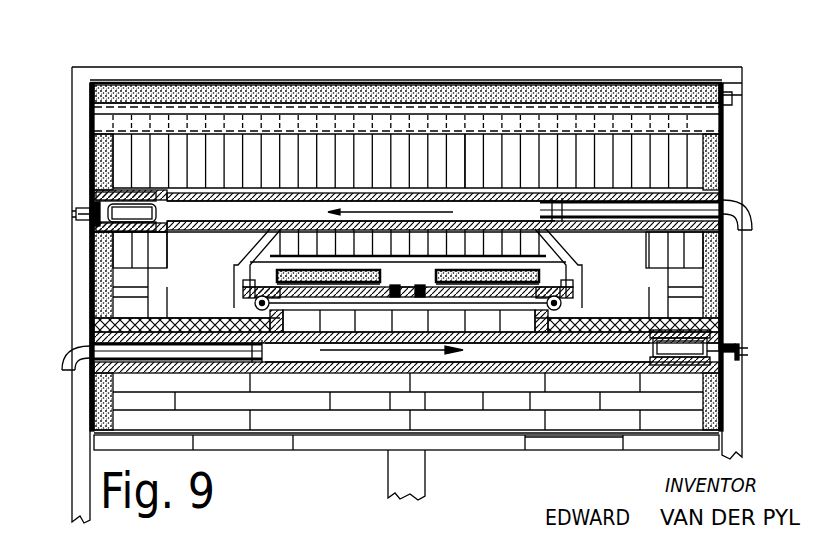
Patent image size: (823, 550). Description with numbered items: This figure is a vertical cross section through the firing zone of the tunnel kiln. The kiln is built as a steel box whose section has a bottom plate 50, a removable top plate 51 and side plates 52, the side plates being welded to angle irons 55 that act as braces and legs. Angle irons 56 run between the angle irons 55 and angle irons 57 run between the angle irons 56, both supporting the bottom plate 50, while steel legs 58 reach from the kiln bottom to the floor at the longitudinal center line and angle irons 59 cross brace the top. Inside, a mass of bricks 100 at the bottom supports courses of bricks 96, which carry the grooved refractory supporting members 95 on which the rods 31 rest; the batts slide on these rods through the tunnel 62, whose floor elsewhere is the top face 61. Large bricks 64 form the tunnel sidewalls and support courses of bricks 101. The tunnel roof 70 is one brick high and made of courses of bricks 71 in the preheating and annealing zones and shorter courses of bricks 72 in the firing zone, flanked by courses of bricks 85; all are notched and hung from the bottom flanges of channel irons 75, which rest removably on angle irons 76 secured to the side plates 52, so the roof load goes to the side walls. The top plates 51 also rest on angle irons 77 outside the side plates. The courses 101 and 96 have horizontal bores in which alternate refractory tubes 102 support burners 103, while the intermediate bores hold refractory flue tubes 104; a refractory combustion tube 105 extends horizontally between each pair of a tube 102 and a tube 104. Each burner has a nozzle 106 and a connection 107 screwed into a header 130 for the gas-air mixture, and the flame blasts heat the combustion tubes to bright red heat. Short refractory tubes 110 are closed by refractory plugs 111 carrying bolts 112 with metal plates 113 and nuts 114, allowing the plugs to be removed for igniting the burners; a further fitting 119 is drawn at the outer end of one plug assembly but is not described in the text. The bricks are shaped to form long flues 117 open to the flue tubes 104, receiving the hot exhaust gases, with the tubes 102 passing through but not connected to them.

The rods 31 is at (235, 296).
The bottom plate 50 is at (452, 437).
The top plate 51 is at (147, 86).
The side plates 52 is at (100, 284).
The angle irons 55 is at (76, 498).
The angle irons 56 is at (583, 440).
The angle irons 57 is at (533, 440).
The steel legs 58 is at (395, 498).
The angle irons 59 is at (272, 70).
The top face 61 is at (410, 305).
The tunnel 62 is at (507, 303).
The large bricks 64 is at (137, 262).
The tunnel roof 70 is at (312, 112).
The courses of bricks 71 is at (488, 188).
The courses of bricks 72 is at (470, 140).
The channel irons 75 is at (622, 102).
The angle irons 76 is at (93, 140).
The angle irons 77 is at (90, 92).
The courses of bricks 85 is at (176, 140).
The refractory supporting members 95 is at (283, 320).
The courses of bricks 96 is at (96, 325).
The mass of bricks 100 is at (300, 400).
The courses of bricks 101 is at (105, 160).
The refractory tubes 102 is at (97, 375).
The burners 103 is at (622, 220).
The refractory flue tubes 104 is at (235, 188).
The refractory combustion tube 105 is at (378, 188).
The nozzles 106 is at (565, 188).
The connections 107 is at (745, 195).
The short refractory tubes 110 is at (100, 178).
The refractory plugs 111 is at (100, 188).
The bolts 112 is at (150, 200).
The metal plates 113 is at (92, 222).
The nuts 114 is at (740, 358).
The flues 117 is at (165, 268).
The bolt 119 is at (82, 213).
The header 130 is at (742, 190).